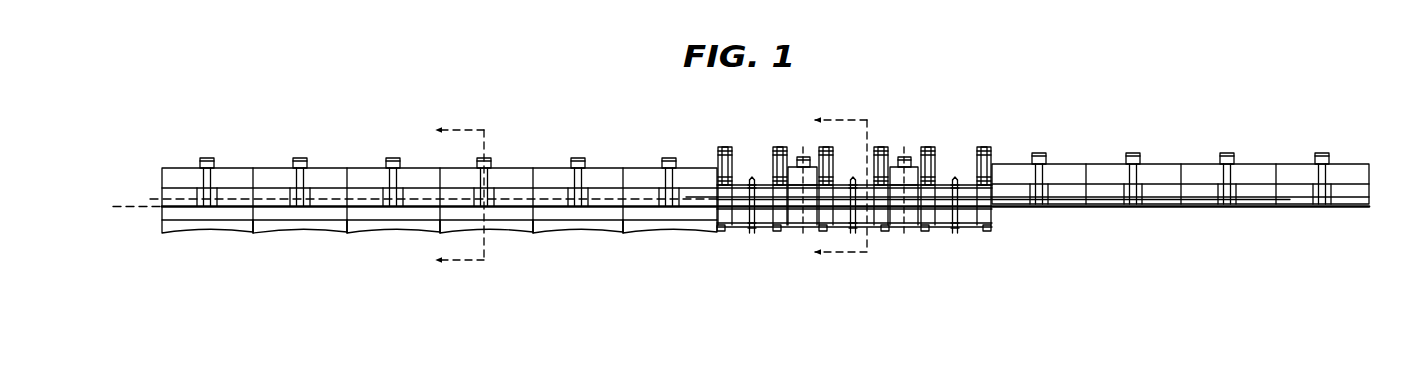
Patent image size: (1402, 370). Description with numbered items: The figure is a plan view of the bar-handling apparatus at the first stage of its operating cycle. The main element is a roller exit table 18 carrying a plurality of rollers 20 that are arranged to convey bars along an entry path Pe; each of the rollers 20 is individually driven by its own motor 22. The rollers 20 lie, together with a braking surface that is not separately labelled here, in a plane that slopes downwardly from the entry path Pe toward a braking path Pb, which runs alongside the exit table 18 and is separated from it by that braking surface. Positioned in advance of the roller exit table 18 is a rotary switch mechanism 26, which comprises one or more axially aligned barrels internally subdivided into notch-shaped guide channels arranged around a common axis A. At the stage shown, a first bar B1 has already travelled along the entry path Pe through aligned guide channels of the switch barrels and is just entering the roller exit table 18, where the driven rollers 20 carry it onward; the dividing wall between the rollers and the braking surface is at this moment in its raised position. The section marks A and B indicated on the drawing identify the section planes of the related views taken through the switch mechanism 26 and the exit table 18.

The roller exit table 18 is at (627, 143).
The rollers 20 is at (387, 203).
The motors 22 is at (299, 158).
The rotary switch mechanism 26 is at (959, 138).
The entry path Pe is at (236, 198).
The braking path Pb is at (127, 209).
The first bar B1 is at (693, 203).
The common axis A is at (449, 197).
The section B- B is at (831, 187).